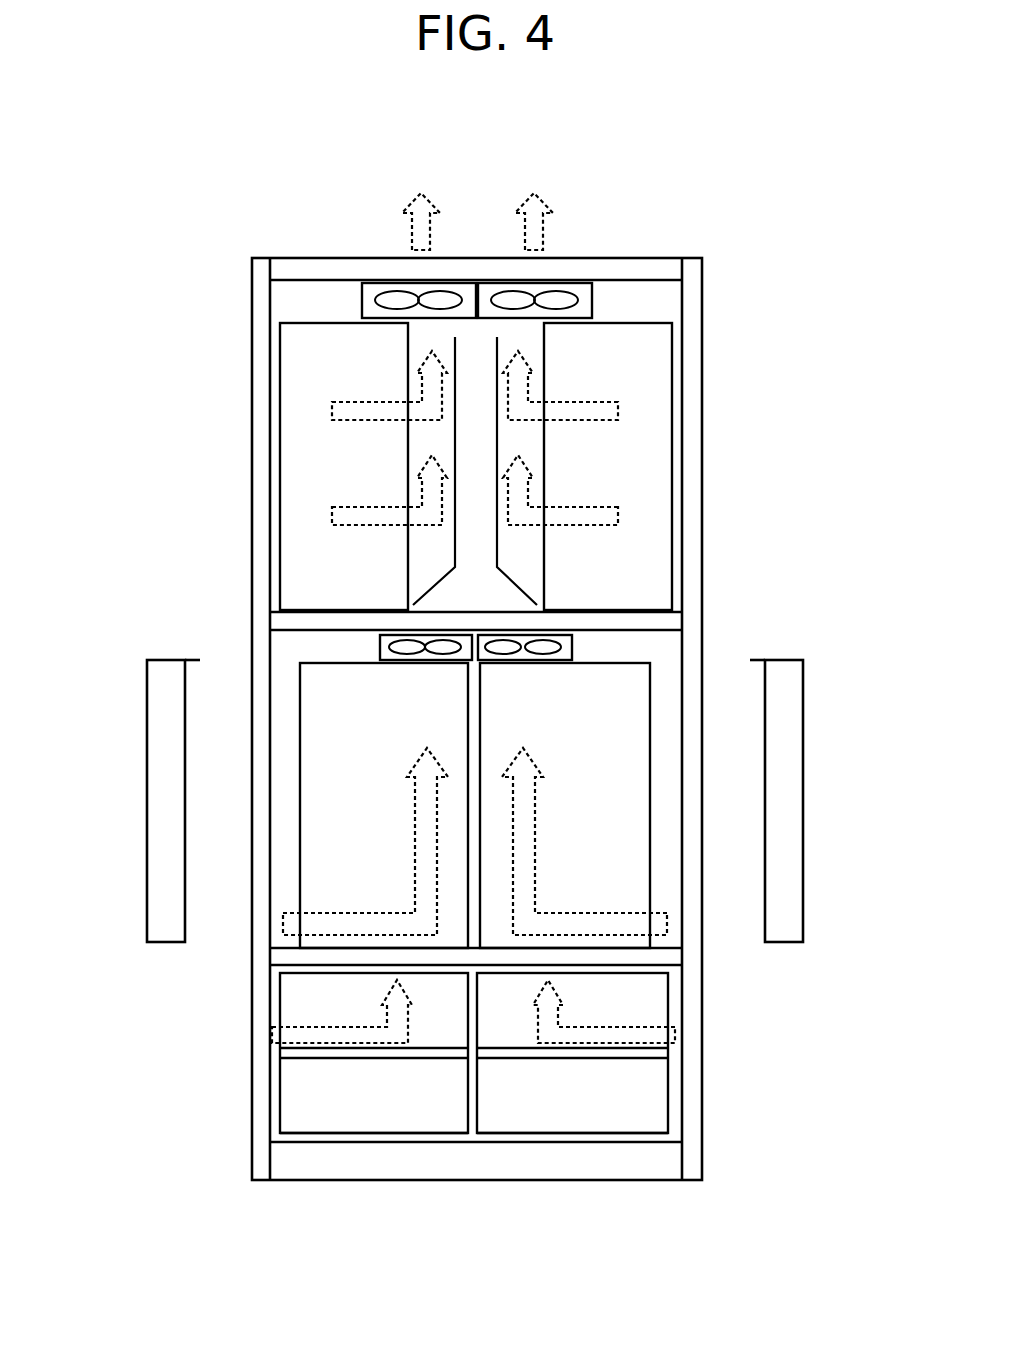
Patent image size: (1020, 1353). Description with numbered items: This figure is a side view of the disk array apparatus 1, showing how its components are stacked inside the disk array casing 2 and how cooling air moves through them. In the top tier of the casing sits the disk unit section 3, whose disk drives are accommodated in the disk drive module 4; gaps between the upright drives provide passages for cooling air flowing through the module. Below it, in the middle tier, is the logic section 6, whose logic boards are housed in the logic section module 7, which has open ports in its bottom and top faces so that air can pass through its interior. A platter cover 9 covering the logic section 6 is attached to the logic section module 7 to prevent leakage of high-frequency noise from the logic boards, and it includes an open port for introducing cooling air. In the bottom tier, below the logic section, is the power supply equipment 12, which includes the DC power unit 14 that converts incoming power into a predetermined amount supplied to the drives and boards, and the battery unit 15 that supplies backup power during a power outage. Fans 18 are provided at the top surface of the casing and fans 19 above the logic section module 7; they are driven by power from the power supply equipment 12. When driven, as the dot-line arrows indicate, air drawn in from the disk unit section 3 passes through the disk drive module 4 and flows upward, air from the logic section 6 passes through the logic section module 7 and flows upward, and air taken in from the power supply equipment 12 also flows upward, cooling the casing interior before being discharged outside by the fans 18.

The disk array apparatus 1 is at (271, 228).
The disk array casing 2 is at (252, 305).
The disk unit section 3 is at (267, 402).
The disk drive module 4 is at (300, 453).
The logic section 6 is at (287, 755).
The logic section module 7 is at (323, 878).
The platter cover 9 is at (165, 770).
The power supply equipment 12 is at (260, 1085).
The DC power unit 14 is at (298, 1003).
The battery unit 15 is at (300, 1098).
The fans 18 is at (583, 288).
The fans 19 is at (383, 633).